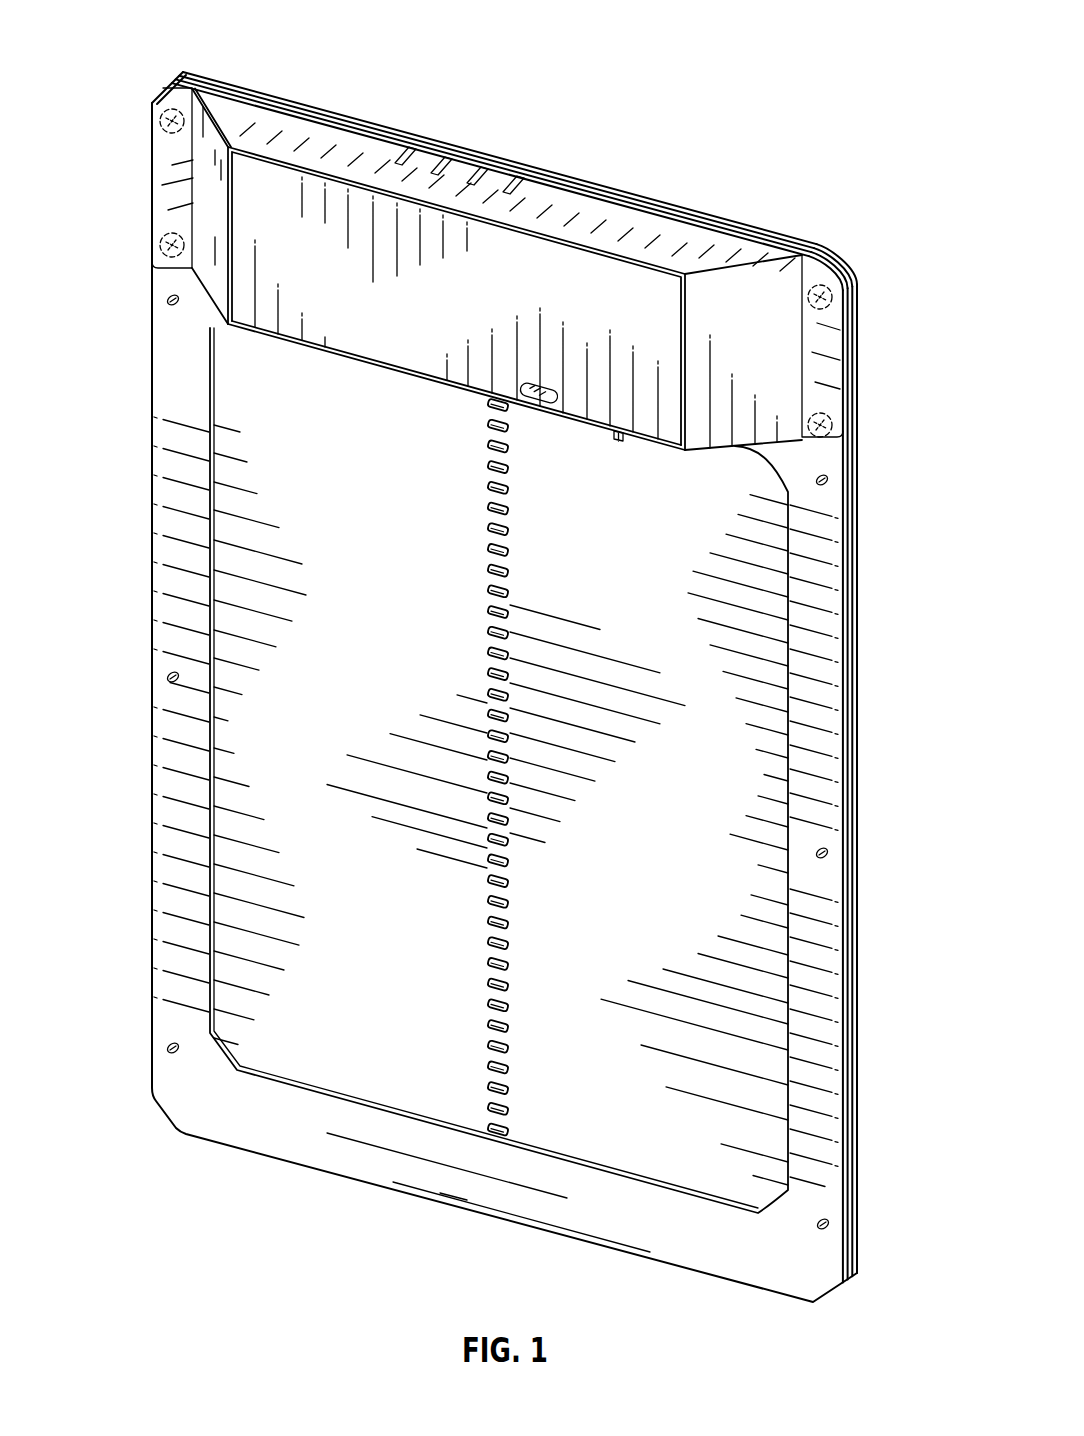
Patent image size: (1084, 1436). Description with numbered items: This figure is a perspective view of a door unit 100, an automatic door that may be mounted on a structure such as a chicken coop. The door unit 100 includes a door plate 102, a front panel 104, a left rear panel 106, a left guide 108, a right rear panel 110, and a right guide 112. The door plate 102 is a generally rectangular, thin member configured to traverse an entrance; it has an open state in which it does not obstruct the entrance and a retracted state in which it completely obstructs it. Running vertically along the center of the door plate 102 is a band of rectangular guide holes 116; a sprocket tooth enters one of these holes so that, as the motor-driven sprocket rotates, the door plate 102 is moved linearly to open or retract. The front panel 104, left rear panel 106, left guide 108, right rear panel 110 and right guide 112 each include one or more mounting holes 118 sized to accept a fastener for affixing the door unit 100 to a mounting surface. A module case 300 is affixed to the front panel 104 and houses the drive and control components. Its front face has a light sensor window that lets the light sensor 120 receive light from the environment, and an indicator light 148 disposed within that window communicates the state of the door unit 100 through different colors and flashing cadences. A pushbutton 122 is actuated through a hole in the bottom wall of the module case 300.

The door unit 100 is at (146, 50).
The door plate 102 is at (740, 820).
The front panel 104 is at (830, 503).
The left rear panel 106 is at (233, 80).
The left guide 108 is at (193, 73).
The right rear panel 110 is at (793, 230).
The right guide 112 is at (843, 270).
The rectangular guide holes 116 is at (487, 593).
The mounting holes 118 is at (167, 1047).
The light sensor 120 is at (530, 400).
The pushbutton 122 is at (619, 440).
The indicator light 148 is at (548, 390).
The module case 300 is at (553, 263).